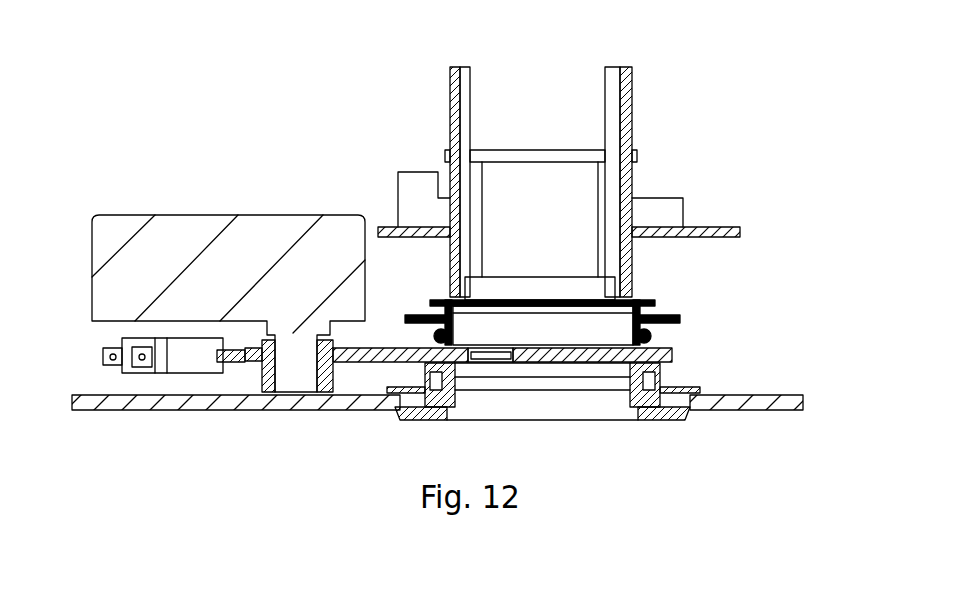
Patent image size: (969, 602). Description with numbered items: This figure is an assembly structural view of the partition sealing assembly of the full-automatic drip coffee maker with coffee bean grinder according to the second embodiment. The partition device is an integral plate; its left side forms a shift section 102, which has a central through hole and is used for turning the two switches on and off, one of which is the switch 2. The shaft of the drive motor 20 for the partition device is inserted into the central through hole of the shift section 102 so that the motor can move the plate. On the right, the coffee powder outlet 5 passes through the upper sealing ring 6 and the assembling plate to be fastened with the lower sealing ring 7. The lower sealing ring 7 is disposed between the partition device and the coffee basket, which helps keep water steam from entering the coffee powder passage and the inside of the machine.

The switch 2 is at (135, 352).
The drive motor for partition device 20 is at (228, 262).
The shift section 102 is at (265, 335).
The coffee powder outlet 5 is at (545, 228).
The upper sealing ring 6 is at (662, 312).
The lower sealing ring 7 is at (655, 395).